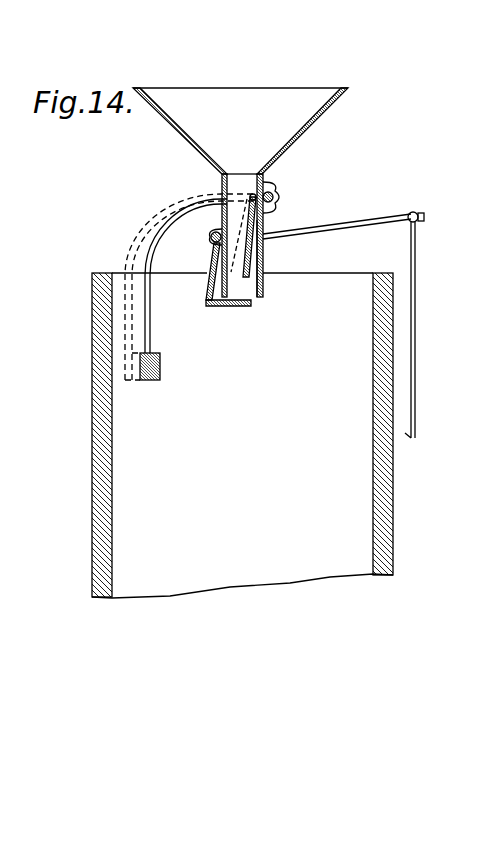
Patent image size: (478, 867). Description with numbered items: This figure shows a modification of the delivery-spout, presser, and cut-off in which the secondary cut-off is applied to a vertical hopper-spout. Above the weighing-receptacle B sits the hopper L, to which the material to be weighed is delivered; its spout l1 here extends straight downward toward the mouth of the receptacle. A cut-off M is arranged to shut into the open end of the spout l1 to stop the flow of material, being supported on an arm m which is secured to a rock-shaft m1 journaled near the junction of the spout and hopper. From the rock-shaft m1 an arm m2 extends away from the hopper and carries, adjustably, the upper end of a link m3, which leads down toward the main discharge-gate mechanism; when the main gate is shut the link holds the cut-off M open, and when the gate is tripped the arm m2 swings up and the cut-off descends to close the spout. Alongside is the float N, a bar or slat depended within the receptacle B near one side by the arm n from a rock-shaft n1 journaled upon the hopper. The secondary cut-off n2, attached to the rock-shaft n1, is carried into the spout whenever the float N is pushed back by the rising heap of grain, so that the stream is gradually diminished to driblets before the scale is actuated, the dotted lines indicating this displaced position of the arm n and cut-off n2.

The vessel / receptacle B is at (242, 435).
The hopper L is at (240, 192).
The float arm n is at (191, 287).
The float N is at (162, 365).
The secondary cut-off n2 is at (243, 245).
The rock-shaft n1 is at (276, 198).
The rock-shaft m1 is at (210, 238).
The cut-off arm m is at (212, 264).
The cut-off M is at (228, 315).
The spout l1 is at (258, 267).
The arm m2 is at (343, 233).
The link m3 is at (426, 330).